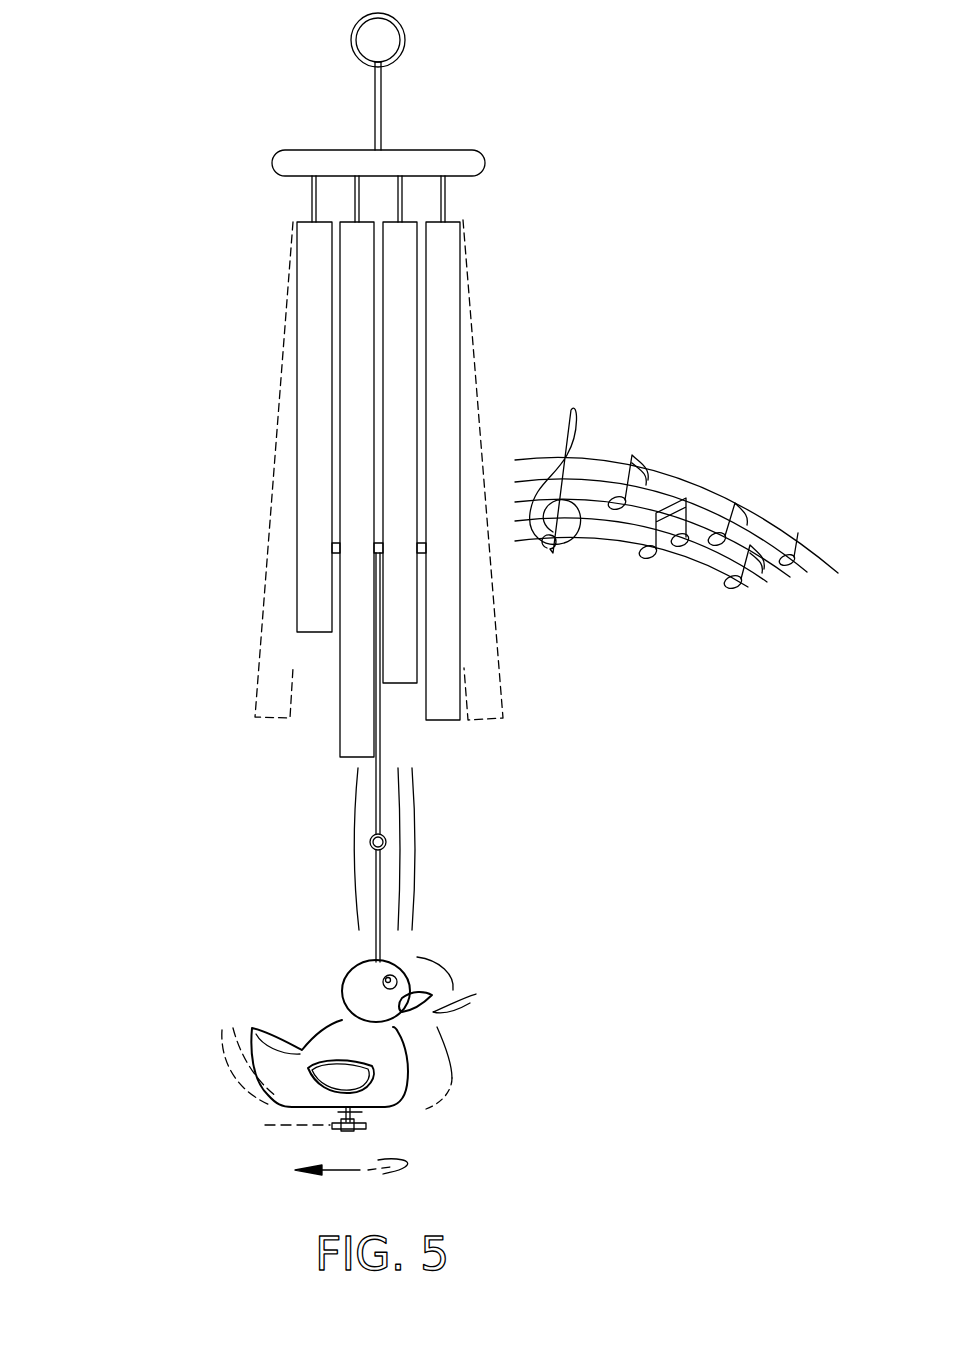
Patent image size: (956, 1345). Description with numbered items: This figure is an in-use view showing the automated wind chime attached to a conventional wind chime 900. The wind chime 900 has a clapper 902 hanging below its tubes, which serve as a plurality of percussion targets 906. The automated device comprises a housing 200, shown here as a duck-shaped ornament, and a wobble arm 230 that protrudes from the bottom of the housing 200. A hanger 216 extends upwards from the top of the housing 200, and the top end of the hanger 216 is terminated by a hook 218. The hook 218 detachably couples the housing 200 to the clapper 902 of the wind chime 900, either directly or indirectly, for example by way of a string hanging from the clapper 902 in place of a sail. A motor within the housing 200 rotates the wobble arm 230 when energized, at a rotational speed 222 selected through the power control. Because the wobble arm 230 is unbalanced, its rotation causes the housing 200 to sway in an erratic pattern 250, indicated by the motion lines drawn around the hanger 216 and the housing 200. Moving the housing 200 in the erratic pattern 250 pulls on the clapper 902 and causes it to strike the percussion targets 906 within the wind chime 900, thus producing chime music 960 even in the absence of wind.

The wind chime 900 is at (345, 487).
The percussion targets 906 is at (360, 300).
The clapper 902 is at (290, 574).
The chime music 960 is at (688, 487).
The hook 218 is at (387, 838).
The erratic pattern 250 is at (413, 848).
The hanger 216 is at (340, 835).
The housing 200 is at (313, 1038).
The wobble arm 230 is at (265, 1126).
The rotational speed 222 is at (383, 1174).